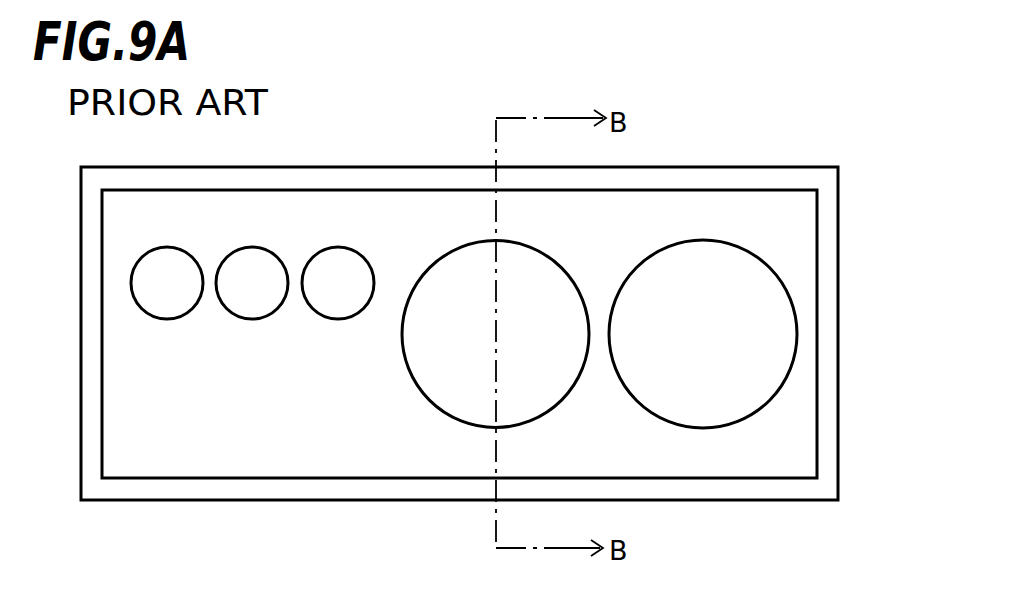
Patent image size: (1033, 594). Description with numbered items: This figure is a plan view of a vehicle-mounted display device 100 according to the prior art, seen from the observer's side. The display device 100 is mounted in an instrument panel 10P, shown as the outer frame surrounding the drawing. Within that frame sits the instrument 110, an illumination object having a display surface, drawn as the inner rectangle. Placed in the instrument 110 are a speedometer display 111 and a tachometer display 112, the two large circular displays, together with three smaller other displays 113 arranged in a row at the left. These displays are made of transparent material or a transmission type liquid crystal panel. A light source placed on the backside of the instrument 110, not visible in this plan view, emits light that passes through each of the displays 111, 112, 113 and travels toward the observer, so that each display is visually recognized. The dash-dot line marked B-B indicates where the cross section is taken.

The display device 100 is at (734, 106).
The instrument panel 10P is at (764, 167).
The instrument 110 is at (805, 232).
The speedometer display 111 is at (460, 410).
The tachometer display 112 is at (736, 410).
The other displays 113 is at (165, 318).